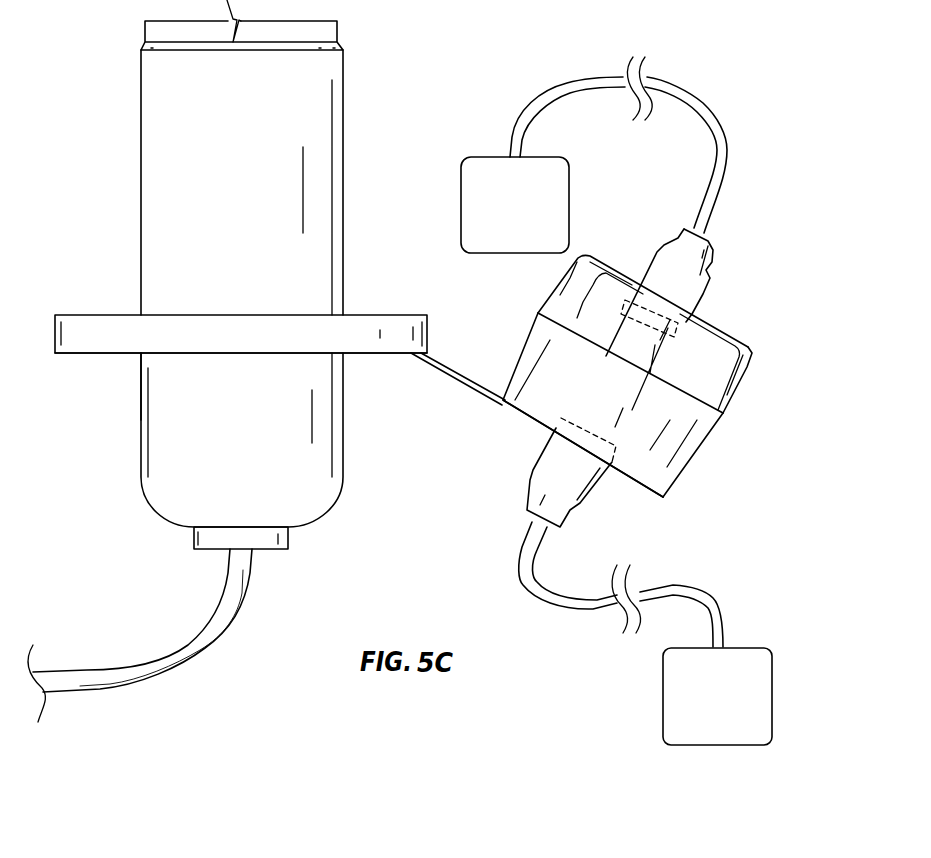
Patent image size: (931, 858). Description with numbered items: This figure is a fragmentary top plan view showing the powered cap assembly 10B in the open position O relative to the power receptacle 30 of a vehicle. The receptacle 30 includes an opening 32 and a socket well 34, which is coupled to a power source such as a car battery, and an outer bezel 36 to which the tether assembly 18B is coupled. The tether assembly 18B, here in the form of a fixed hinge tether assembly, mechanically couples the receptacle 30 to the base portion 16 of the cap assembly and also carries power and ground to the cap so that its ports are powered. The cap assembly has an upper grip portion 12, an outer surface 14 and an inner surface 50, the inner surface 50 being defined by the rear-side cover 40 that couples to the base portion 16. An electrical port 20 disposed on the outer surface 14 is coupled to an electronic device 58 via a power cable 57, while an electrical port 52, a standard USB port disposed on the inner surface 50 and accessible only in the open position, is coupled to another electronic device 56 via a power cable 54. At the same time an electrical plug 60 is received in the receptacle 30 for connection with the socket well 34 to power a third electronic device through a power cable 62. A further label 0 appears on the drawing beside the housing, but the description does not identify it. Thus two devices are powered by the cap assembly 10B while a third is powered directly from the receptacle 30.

The powered cap assembly 10B is at (603, 235).
The upper grip portion 12 is at (728, 387).
The outer surface 14 is at (690, 332).
The base portion 16 is at (687, 463).
The tether assembly 18B is at (455, 362).
The electrical port 20 is at (672, 326).
The power receptacle 30 is at (83, 368).
The opening 32 is at (140, 357).
The socket well 34 is at (336, 192).
The outer bezel 36 is at (77, 338).
The rear-side cover 40 is at (623, 477).
The inner surface 50 is at (648, 494).
The electrical port 52 is at (560, 418).
The power cable 54 is at (513, 570).
The electronic device 56 is at (773, 680).
The power cable 57 is at (712, 112).
The electronic device 58 is at (480, 157).
The electrical plug 60 is at (313, 497).
The power cable 62 is at (200, 662).
The housing end 0 is at (707, 430).